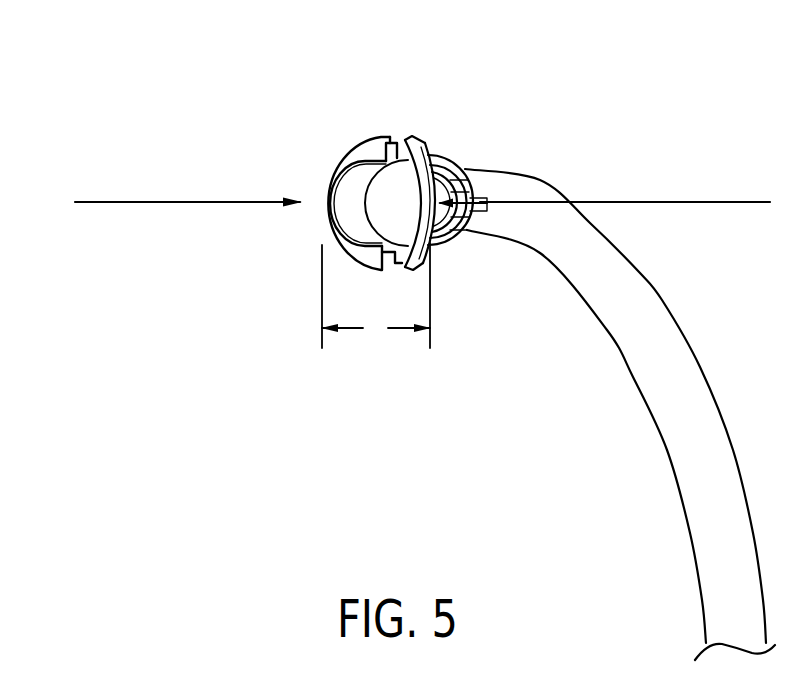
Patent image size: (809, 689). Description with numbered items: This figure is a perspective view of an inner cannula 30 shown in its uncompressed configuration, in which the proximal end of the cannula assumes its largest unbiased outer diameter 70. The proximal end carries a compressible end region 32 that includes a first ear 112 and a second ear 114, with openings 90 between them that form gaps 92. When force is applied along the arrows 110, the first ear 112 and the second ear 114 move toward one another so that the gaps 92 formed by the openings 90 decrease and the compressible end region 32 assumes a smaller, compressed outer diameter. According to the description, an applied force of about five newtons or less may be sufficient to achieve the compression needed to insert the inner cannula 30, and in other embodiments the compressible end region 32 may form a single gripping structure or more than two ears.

The inner cannula 30 is at (331, 494).
The compressible end region 32 is at (452, 160).
The largest unbiased outer diameter 70 is at (377, 342).
The openings 90 is at (397, 147).
The gaps 92 is at (390, 248).
The arrows 110 is at (180, 202).
The first ear 112 is at (345, 148).
The second ear 114 is at (437, 150).